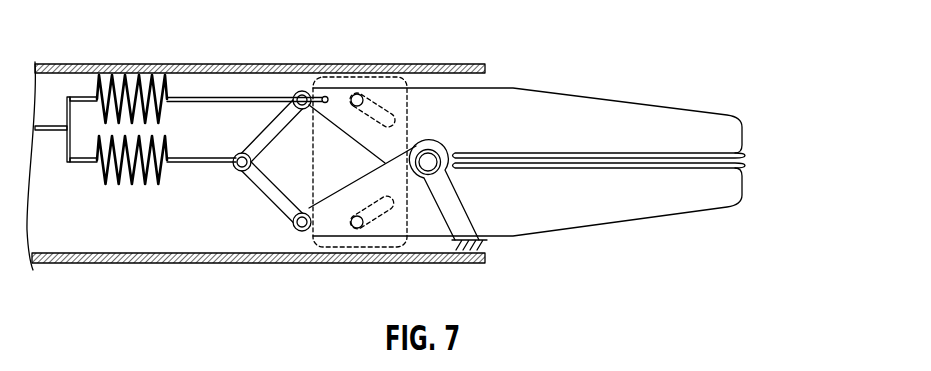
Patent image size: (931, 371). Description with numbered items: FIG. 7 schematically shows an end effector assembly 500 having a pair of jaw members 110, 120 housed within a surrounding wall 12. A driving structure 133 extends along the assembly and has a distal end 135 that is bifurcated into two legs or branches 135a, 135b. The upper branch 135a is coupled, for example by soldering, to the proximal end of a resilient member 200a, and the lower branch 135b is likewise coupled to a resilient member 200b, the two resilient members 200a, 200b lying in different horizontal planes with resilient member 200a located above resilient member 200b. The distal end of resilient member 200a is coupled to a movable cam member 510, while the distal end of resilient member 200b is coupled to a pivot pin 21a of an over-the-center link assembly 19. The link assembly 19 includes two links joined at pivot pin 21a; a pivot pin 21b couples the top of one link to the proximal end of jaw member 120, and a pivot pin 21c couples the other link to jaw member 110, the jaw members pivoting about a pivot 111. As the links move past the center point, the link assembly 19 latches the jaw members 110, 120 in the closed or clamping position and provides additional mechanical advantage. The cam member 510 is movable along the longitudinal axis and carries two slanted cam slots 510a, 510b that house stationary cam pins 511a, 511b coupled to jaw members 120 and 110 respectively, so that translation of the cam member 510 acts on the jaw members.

The tubular housing wall 12 is at (205, 65).
The driving structure 133 is at (47, 126).
The distal end 135 is at (75, 130).
The branch 135a is at (63, 115).
The branch 135b is at (62, 152).
The resilient member 200a is at (135, 61).
The resilient member 200b is at (142, 196).
The link assembly 19 is at (293, 167).
The pivot pin 21a is at (240, 173).
The pivot pin 21b is at (300, 90).
The pivot pin 21c is at (300, 232).
The cam member 510 is at (401, 159).
The cam slot 510a is at (376, 96).
The cam slot 510b is at (373, 224).
The cam pin 511a is at (357, 94).
The cam pin 511b is at (357, 228).
The jaw pivot 111 is at (430, 146).
The jaw member 120 is at (743, 140).
The jaw member 110 is at (743, 188).
The end effector assembly 500 is at (562, 141).